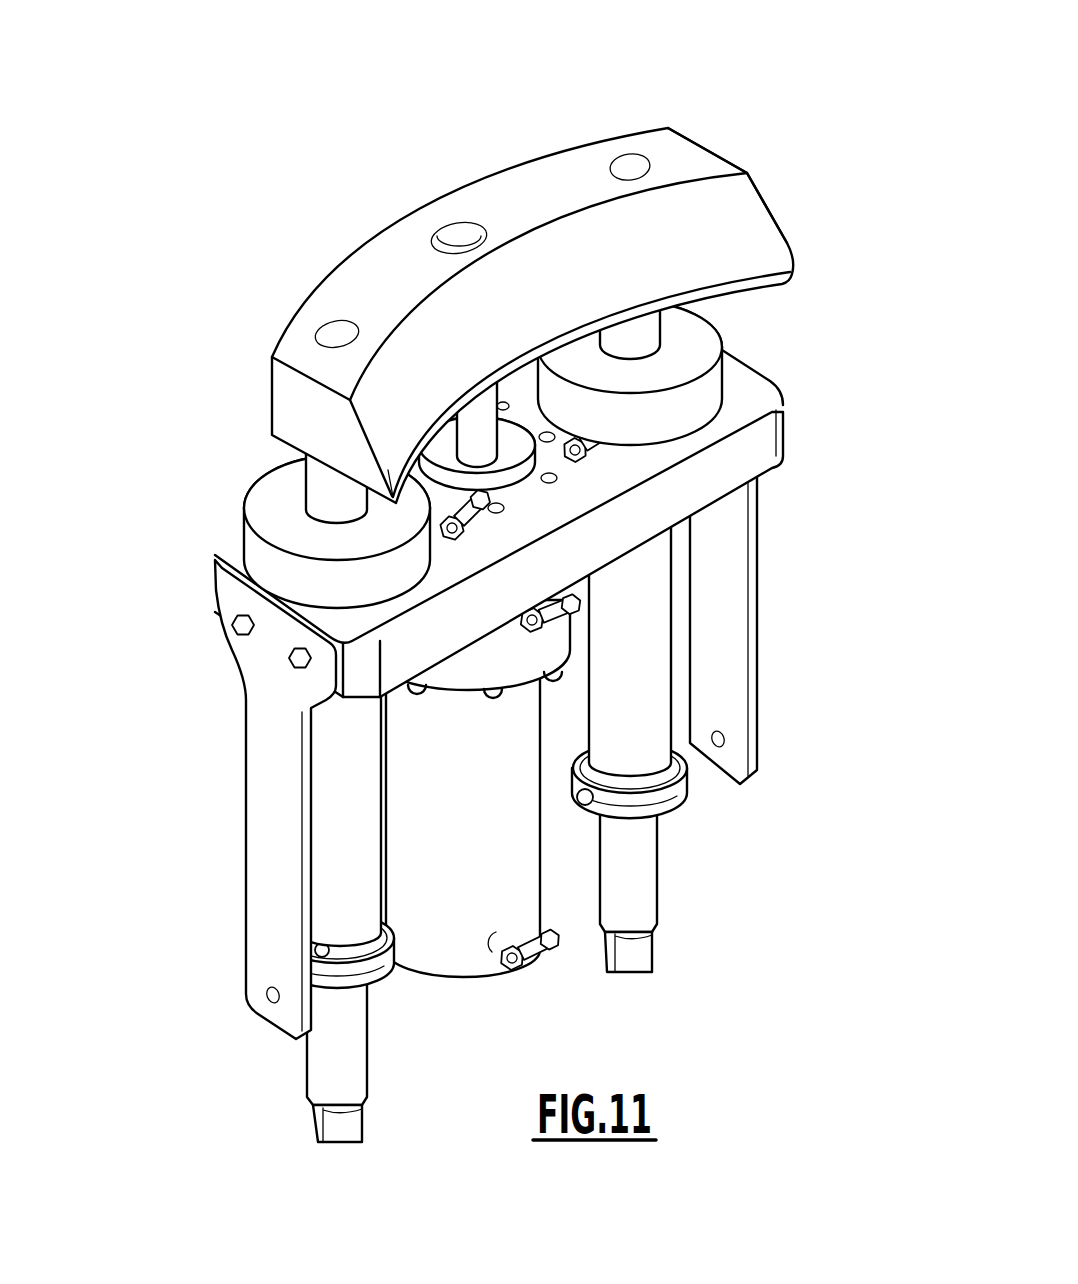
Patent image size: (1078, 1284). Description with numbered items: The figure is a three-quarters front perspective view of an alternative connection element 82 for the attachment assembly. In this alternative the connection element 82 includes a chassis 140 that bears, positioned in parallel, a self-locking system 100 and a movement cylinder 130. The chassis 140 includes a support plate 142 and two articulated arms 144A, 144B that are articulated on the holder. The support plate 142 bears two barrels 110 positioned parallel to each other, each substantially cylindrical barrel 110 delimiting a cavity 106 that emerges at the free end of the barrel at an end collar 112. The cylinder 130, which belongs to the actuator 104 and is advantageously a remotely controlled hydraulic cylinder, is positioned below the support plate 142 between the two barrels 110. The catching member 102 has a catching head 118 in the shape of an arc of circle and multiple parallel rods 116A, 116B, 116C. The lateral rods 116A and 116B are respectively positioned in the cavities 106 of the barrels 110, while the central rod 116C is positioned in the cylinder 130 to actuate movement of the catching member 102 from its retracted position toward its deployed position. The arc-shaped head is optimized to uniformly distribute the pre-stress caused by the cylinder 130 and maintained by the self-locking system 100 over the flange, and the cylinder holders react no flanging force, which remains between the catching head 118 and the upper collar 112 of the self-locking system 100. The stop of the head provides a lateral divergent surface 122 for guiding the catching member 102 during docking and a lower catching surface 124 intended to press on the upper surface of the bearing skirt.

The connection element 82 is at (610, 118).
The self-locking system 100 is at (168, 820).
The catching member 102 is at (322, 270).
The actuator 104 is at (489, 996).
The cavity 106 is at (712, 397).
The barrel 110 is at (650, 707).
The end collar 112 is at (745, 417).
The lateral rod 116A is at (327, 503).
The lateral rod 116B is at (642, 328).
The central rod 116C is at (470, 440).
The catching head 118 is at (692, 150).
The lateral divergent surface 122 is at (730, 215).
The lower catching surface 124 is at (571, 343).
The movement cylinder 130 is at (448, 864).
The chassis 140 is at (805, 441).
The support plate 142 is at (216, 566).
The articulated arm 144A is at (267, 905).
The articulated arm 144B is at (745, 642).